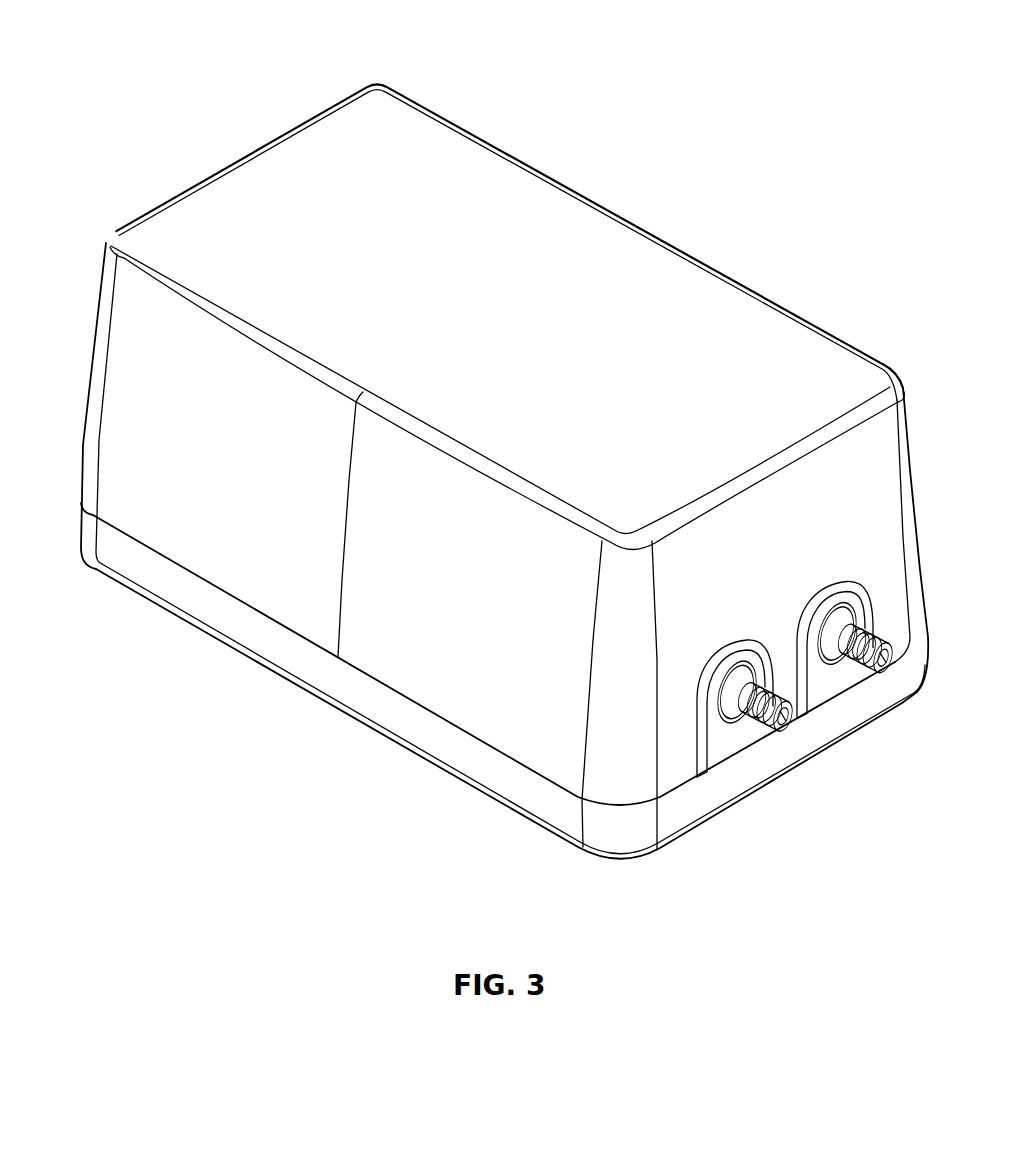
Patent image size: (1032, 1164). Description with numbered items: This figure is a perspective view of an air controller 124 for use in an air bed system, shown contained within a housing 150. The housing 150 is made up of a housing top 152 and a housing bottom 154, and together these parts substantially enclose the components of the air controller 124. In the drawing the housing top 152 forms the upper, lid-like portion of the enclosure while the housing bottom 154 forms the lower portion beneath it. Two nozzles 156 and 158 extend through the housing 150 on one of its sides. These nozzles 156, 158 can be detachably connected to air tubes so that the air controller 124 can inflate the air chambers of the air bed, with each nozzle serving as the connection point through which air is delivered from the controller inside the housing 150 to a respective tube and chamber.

The air controller 124 is at (247, 59).
The housing 150 is at (127, 210).
The housing top 152 is at (138, 397).
The housing bottom 154 is at (143, 572).
The nozzle 156 is at (792, 722).
The nozzle 158 is at (889, 668).